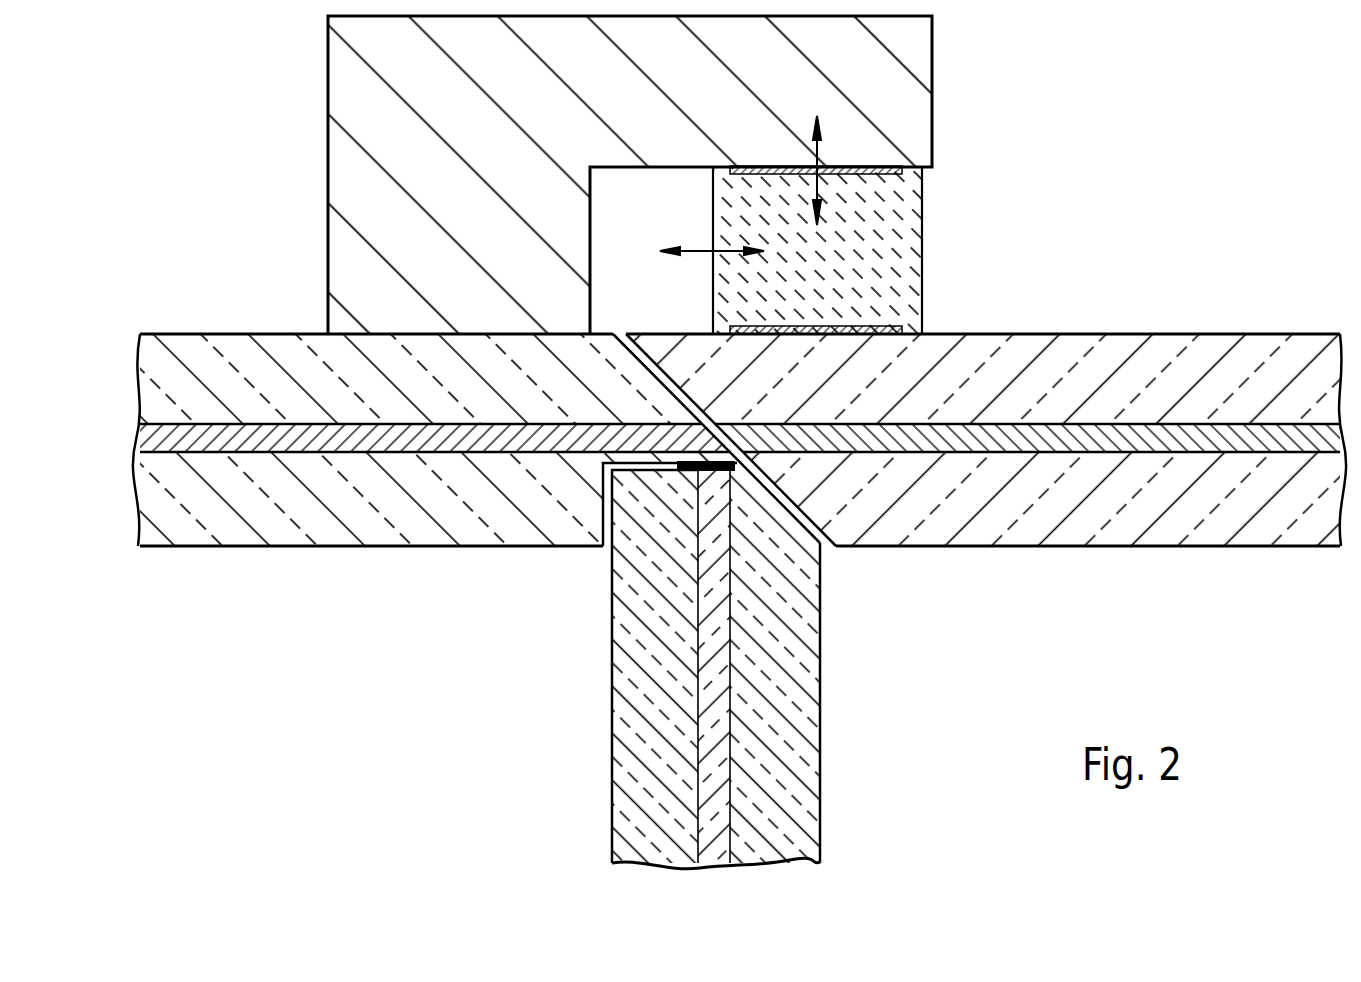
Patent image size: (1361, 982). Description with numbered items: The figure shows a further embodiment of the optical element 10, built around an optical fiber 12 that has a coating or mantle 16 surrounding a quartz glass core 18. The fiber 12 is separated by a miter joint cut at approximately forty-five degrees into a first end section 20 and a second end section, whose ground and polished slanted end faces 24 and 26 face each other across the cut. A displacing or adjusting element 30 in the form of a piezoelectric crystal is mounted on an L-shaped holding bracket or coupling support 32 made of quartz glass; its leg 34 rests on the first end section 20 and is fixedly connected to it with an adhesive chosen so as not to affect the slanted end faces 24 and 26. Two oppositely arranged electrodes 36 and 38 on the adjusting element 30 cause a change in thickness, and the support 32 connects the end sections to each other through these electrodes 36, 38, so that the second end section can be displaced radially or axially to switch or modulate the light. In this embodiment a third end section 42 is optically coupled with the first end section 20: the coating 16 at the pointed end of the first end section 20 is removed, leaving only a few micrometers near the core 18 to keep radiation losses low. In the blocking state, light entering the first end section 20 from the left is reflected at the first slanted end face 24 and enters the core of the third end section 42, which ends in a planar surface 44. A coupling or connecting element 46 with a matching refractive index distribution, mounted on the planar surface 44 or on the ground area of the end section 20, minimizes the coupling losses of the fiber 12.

The optical element 10 is at (406, 708).
The optical fiber 12 is at (739, 571).
The coating (mantle) 16 is at (193, 502).
The core (quartz glass fiber) 18 is at (204, 447).
The first end section 20 is at (400, 518).
The slanted end face 24 is at (658, 348).
The slanted end face 26 is at (800, 525).
The adjusting element 30 is at (847, 283).
The holding bracket or coupling support 32 is at (703, 104).
The leg 34 is at (475, 277).
The electrode 36 is at (882, 170).
The electrode 38 is at (873, 322).
The third end section 42 is at (637, 691).
The planar surface 44 is at (603, 490).
The coupling or connecting element 46 is at (690, 470).